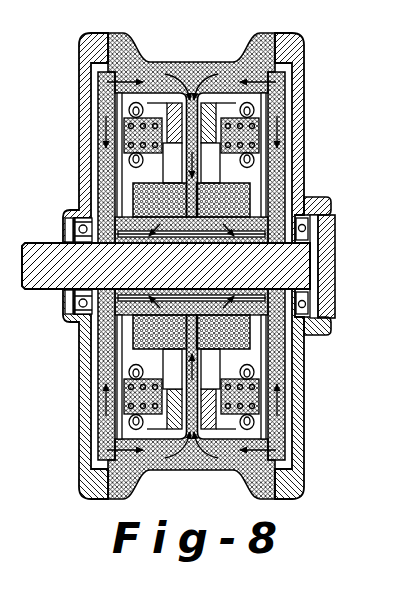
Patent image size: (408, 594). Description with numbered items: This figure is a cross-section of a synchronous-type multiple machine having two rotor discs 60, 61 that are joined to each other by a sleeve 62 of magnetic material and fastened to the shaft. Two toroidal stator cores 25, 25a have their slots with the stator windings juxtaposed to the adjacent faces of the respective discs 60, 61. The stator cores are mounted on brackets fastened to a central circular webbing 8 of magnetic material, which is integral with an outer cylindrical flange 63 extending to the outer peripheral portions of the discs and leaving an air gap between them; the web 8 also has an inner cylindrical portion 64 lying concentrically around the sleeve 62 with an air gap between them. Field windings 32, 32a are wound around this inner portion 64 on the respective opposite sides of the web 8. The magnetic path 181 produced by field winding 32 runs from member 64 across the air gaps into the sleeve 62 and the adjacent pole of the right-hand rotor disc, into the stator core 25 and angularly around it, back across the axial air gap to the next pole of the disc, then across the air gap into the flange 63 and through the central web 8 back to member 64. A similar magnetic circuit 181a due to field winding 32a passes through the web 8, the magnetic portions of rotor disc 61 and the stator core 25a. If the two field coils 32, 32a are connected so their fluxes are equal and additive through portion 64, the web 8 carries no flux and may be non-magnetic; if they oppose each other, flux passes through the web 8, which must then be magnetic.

The central circular webbing 8 is at (125, 360).
The toroidal stator core 25 is at (244, 133).
The toroidal stator core 25a is at (137, 133).
The field winding 32 is at (272, 200).
The field winding 32a is at (133, 193).
The rotor disc 60 is at (287, 165).
The rotor disc 61 is at (97, 165).
The sleeve 62 is at (250, 237).
The outer cylindrical flange 63 is at (163, 63).
The inner cylindrical portion 64 is at (325, 330).
The magnetic path 181 is at (281, 120).
The magnetic circuit 181a is at (118, 72).